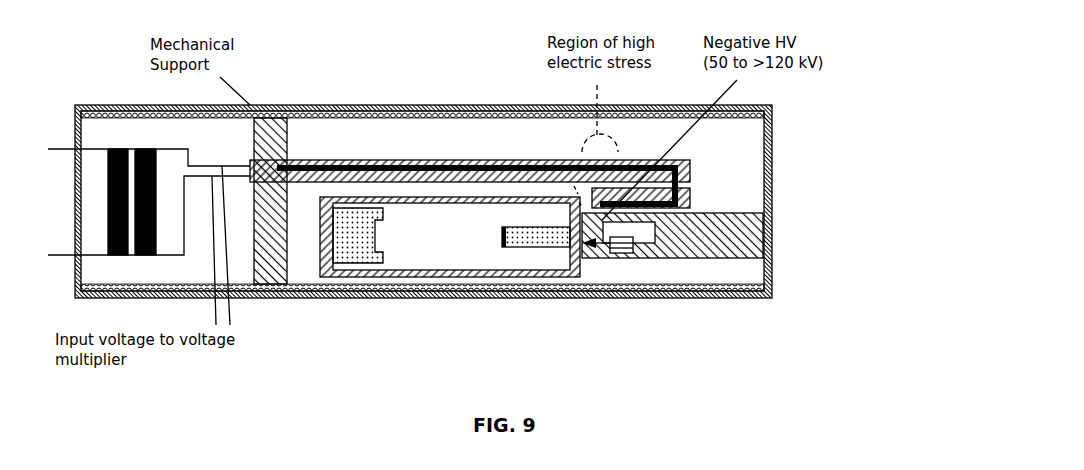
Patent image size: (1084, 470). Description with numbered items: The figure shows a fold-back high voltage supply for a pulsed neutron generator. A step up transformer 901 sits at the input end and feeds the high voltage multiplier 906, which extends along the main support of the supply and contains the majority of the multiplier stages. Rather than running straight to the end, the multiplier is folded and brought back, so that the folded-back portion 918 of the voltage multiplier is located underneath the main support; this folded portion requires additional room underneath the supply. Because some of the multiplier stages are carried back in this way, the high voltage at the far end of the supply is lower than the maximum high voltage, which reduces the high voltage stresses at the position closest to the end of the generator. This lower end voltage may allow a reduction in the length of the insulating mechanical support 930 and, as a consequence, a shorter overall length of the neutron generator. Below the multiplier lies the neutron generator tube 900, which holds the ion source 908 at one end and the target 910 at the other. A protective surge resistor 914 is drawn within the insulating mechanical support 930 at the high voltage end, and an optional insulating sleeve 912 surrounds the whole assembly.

The neutron generator tube 900 is at (427, 260).
The step up transformer 901 is at (110, 149).
The high voltage multiplier 906 is at (457, 162).
The ion source 908 is at (358, 246).
The target 910 is at (507, 247).
The insulating sleeve 912 is at (303, 105).
The protective surge resistor 914 is at (628, 253).
The folded-back portion of the voltage multiplier 918 is at (688, 190).
The insulating mechanical support 930 is at (738, 248).